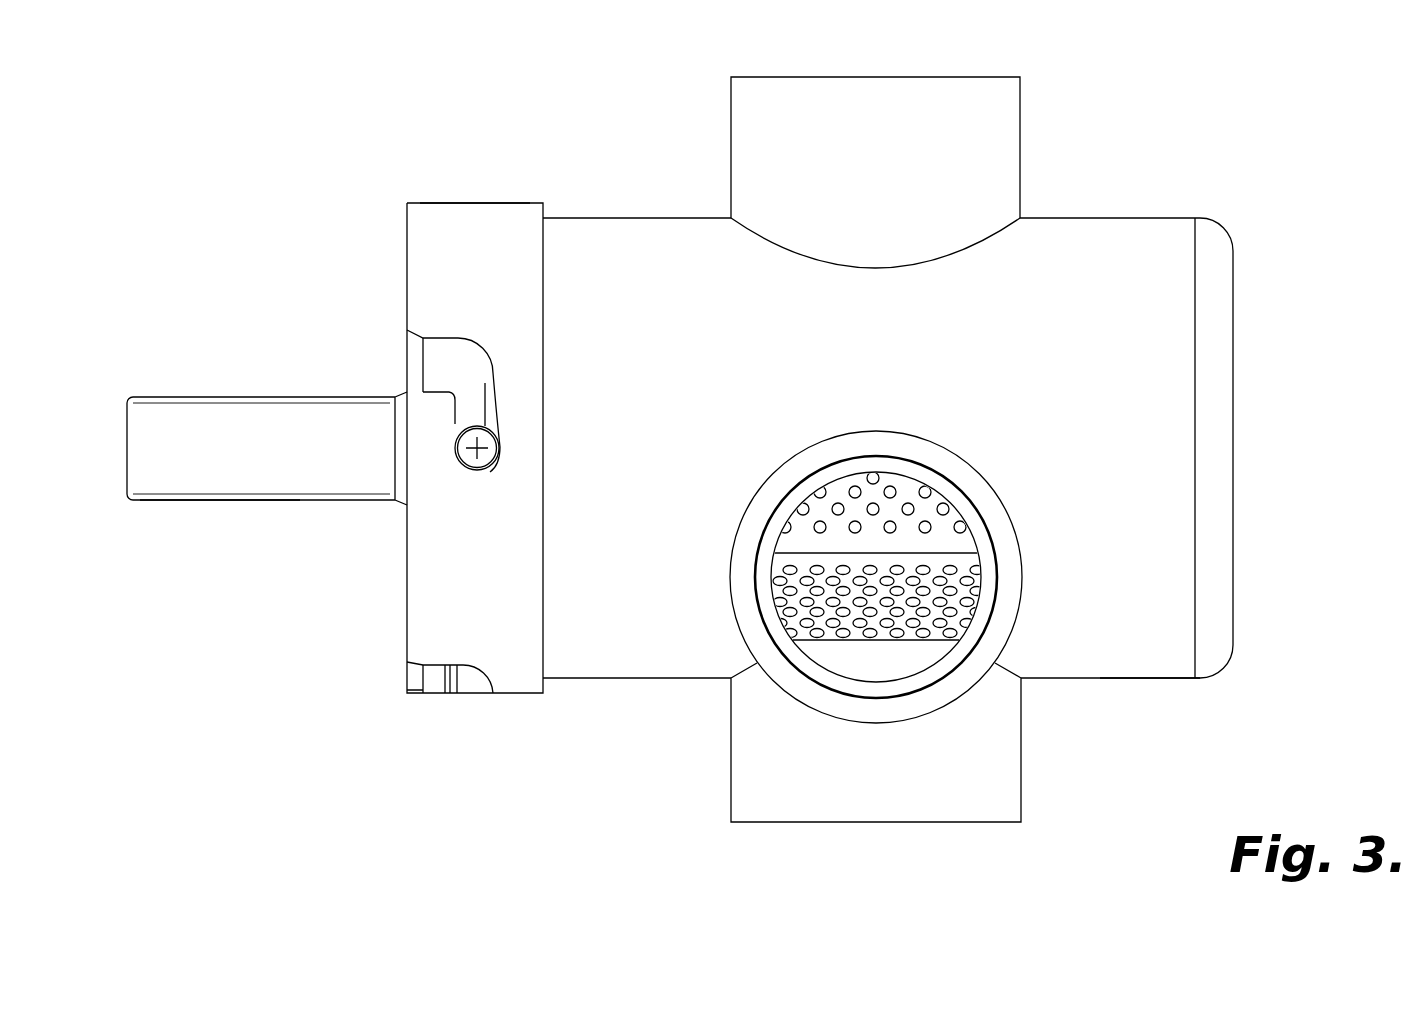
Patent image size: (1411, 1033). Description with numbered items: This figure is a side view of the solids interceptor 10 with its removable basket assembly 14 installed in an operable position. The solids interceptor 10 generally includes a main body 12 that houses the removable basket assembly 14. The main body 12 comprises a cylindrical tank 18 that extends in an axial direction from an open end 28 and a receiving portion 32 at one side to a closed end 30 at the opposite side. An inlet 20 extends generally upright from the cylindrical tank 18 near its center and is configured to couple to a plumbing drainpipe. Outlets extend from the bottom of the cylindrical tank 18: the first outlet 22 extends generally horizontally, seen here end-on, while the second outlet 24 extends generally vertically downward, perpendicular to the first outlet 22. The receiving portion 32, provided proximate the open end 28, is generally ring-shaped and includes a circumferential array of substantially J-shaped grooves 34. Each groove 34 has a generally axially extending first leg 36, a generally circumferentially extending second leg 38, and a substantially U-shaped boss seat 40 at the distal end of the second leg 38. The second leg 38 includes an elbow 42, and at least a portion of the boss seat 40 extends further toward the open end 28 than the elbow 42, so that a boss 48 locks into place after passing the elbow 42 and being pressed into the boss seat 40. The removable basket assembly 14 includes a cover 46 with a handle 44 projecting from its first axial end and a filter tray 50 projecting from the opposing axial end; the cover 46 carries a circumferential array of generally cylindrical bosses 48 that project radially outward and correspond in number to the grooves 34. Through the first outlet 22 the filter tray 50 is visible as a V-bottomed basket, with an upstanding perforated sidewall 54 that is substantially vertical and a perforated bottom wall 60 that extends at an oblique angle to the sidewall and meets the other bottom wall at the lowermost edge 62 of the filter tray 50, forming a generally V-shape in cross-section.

The solids interceptor 10 is at (283, 110).
The main body 12 is at (1145, 232).
The removable basket assembly 14 is at (228, 415).
The cylindrical tank 18 is at (1155, 680).
The inlet 20 is at (800, 77).
The first outlet 22 is at (800, 445).
The second outlet 24 is at (730, 790).
The open end 28 is at (406, 238).
The closed end 30 is at (1233, 330).
The receiving portion 32 is at (485, 228).
The grooves 34 is at (460, 338).
The first leg 36 is at (445, 362).
The second leg 38 is at (500, 413).
The boss seat 40 is at (480, 470).
The elbow 42 is at (455, 437).
The handle 44 is at (180, 490).
The cover 46 is at (470, 388).
The bosses 48 is at (478, 449).
The filter tray 50 is at (878, 608).
The upstanding perforated sidewall 54 is at (925, 513).
The perforated bottom wall 60 is at (945, 600).
The lowermost edge 62 is at (835, 640).